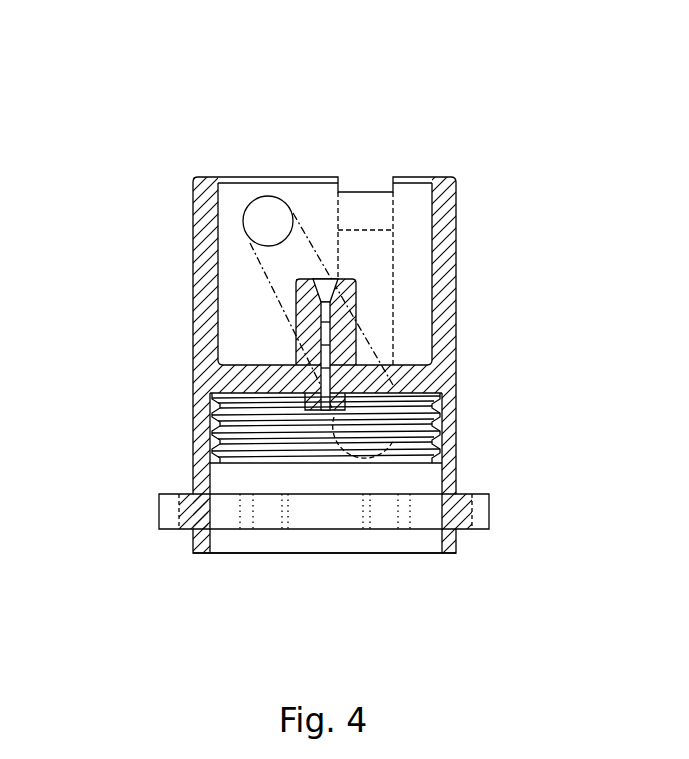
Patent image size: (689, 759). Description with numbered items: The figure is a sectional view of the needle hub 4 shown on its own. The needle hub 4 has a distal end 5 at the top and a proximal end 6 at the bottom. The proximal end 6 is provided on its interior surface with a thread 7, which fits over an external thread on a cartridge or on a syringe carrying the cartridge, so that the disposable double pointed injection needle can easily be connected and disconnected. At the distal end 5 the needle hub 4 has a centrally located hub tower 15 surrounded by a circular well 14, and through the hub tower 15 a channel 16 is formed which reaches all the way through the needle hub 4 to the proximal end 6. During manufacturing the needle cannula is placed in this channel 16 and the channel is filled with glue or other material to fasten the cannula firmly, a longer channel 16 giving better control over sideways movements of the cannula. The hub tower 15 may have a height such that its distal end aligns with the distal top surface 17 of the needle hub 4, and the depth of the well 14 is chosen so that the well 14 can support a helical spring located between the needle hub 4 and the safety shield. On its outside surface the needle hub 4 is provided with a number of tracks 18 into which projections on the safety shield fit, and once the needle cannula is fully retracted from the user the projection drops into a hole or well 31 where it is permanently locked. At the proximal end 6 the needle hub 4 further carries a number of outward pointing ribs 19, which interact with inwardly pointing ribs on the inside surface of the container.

The needle hub 4 is at (459, 385).
The distal end 5 is at (459, 199).
The proximal end 6 is at (457, 538).
The thread 7 is at (253, 428).
The circular well 14 is at (260, 328).
The hub tower 15 is at (338, 306).
The channel 16 is at (328, 283).
The distal top surface 17 is at (211, 177).
The track 18 is at (288, 266).
The outward pointing rib 19 is at (488, 532).
The hole or well 31 is at (257, 223).